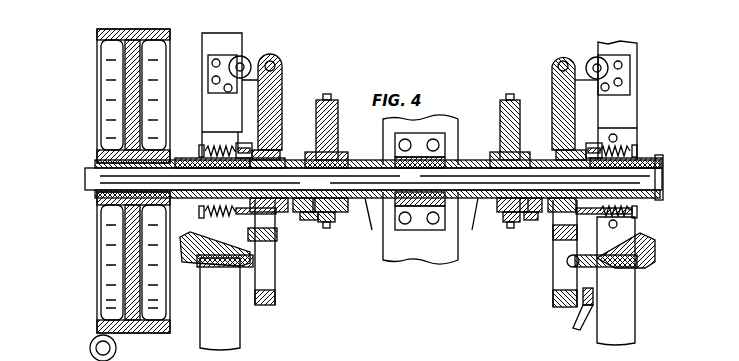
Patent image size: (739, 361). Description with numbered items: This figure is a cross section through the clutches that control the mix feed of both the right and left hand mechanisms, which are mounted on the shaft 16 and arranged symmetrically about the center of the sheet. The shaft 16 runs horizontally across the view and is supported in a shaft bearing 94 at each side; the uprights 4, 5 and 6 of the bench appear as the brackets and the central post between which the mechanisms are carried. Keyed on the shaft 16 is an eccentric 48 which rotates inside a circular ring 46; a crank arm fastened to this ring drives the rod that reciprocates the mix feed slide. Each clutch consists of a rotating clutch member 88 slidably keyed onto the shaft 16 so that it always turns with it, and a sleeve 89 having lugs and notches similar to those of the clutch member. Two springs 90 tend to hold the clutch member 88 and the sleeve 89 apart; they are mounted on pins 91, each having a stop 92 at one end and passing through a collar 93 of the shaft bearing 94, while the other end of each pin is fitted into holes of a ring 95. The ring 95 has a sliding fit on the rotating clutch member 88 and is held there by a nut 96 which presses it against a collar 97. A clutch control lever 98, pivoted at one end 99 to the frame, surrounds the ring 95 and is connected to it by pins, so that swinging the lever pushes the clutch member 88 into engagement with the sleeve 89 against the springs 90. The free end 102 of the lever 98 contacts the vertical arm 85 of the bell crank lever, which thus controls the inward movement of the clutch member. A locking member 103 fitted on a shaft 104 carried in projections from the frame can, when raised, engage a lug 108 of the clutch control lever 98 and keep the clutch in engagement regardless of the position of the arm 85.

The upright 4 is at (639, 48).
The upright 5 is at (450, 136).
The upright 6 is at (244, 44).
The shaft 16 is at (86, 184).
The circular ring 46 is at (332, 100).
The eccentric 48 is at (342, 158).
The vertical arm 85 is at (236, 302).
The rotating clutch member 88 is at (300, 212).
The sleeve 89 is at (425, 223).
The spring 90 is at (222, 150).
The pin 91 is at (224, 146).
The stop 92 is at (199, 151).
The collar 93 is at (240, 146).
The shaft bearing 94 is at (170, 210).
The ring 95 is at (270, 150).
The nut 96 is at (286, 212).
The collar 97 is at (280, 160).
The clutch control lever 98 is at (282, 92).
The pivot end 99 is at (272, 62).
The free end 102 is at (265, 306).
The locking member 103 is at (252, 270).
The shaft 104 is at (192, 264).
The lug 108 is at (272, 240).